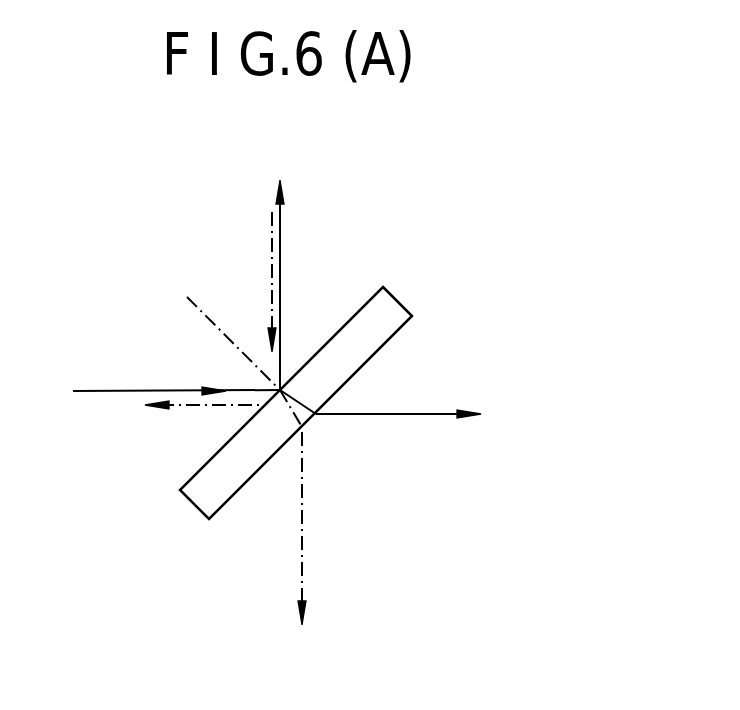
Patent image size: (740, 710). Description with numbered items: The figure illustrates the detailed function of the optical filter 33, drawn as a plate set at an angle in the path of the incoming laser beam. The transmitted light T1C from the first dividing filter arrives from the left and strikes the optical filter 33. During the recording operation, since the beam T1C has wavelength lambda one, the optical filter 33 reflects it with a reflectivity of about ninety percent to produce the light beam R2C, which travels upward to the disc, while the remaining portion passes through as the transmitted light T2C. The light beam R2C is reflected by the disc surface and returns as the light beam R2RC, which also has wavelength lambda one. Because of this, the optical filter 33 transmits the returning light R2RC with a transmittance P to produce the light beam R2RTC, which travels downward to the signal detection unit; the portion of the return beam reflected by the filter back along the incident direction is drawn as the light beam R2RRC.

The optical filter 33 is at (403, 305).
The transmitted light T1C is at (176, 375).
The transmitted light beam T2C is at (392, 397).
The reflected light beam R2C is at (293, 263).
The disc-reflected light beam R2RC is at (233, 301).
The return beam reflected by optical filter R2RRC is at (204, 422).
The transmitted return light beam R2RTC is at (348, 541).